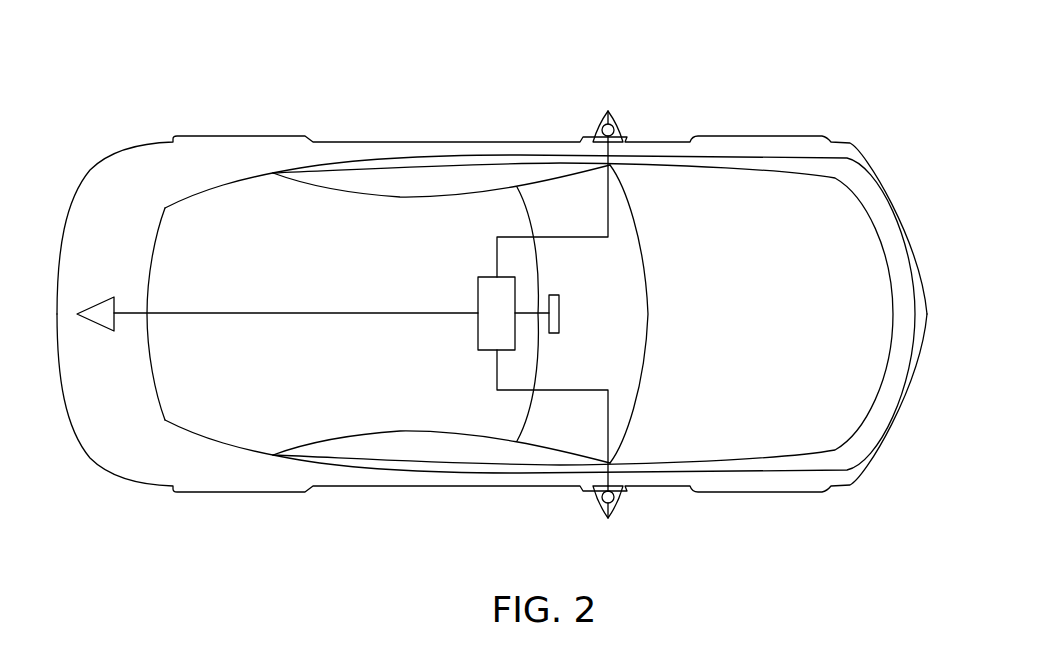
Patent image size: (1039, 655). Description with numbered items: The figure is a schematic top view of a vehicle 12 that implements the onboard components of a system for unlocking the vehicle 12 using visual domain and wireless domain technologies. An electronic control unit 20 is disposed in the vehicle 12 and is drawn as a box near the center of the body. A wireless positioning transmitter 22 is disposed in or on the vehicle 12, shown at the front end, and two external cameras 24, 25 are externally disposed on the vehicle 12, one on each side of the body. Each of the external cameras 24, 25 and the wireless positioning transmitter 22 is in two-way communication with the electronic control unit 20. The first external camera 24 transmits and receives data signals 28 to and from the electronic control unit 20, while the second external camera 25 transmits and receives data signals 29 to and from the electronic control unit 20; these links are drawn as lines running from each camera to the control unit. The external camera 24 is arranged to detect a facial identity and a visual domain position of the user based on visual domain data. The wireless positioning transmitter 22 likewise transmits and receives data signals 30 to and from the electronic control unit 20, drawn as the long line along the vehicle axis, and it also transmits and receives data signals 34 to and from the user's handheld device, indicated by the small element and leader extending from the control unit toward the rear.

The vehicle 12 is at (218, 76).
The electronic control unit 20 is at (485, 326).
The wireless positioning transmitter 22 is at (97, 300).
The external camera 24 is at (608, 111).
The external camera 25 is at (608, 518).
The data signals 28 is at (608, 197).
The data signals 29 is at (608, 433).
The data signals 30 is at (330, 313).
The data signals 34 is at (559, 314).